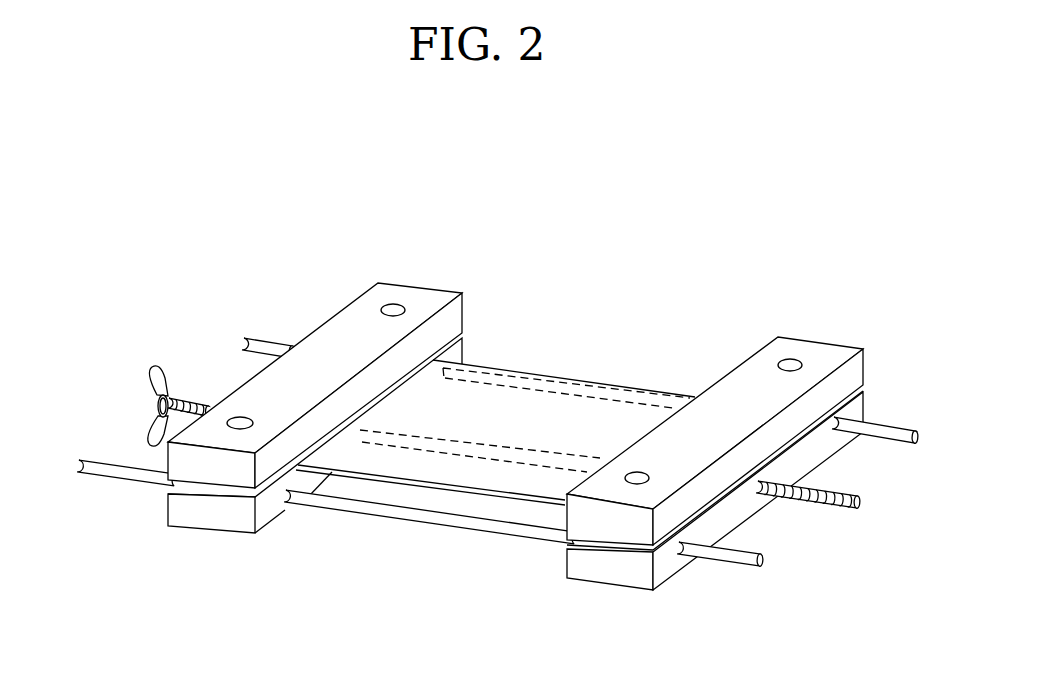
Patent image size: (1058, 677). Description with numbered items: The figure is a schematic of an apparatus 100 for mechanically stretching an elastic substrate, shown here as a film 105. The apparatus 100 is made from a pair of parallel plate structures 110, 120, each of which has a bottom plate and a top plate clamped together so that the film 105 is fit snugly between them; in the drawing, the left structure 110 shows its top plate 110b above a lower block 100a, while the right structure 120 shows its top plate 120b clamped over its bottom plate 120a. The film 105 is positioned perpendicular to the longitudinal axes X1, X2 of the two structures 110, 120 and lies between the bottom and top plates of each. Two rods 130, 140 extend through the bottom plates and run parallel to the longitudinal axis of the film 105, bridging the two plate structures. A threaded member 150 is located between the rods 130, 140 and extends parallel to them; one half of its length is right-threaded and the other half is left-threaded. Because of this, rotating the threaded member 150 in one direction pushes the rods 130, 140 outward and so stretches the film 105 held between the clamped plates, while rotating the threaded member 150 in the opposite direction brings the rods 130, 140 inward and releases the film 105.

The apparatus 100 is at (601, 270).
The lower left clamping block 100a is at (222, 513).
The film 105 is at (515, 415).
The plate structure 110 is at (355, 318).
The top plate 110b is at (465, 305).
The plate structure 120 is at (836, 348).
The bottom plate 120a is at (608, 567).
The top plate 120b is at (808, 345).
The rod 130 is at (893, 432).
The rod 140 is at (733, 558).
The threaded member 150 is at (835, 504).
The longitudinal axis X1 is at (193, 465).
The longitudinal axis X2 is at (590, 523).